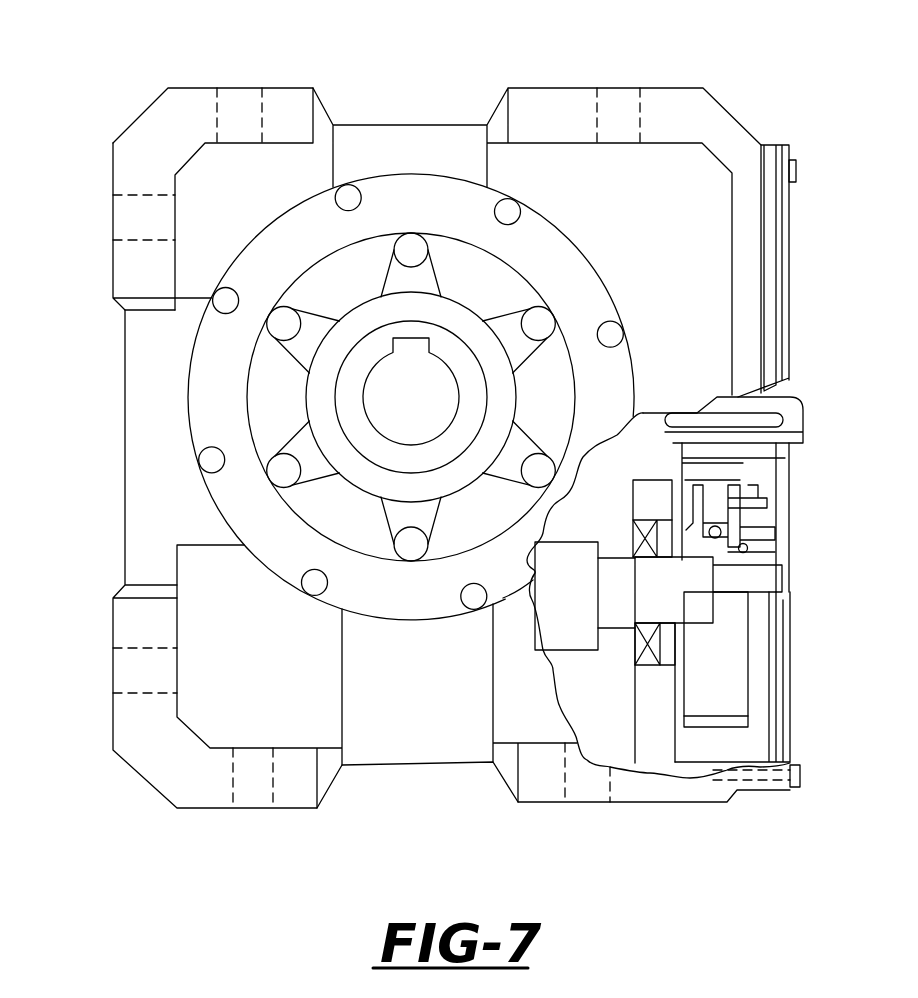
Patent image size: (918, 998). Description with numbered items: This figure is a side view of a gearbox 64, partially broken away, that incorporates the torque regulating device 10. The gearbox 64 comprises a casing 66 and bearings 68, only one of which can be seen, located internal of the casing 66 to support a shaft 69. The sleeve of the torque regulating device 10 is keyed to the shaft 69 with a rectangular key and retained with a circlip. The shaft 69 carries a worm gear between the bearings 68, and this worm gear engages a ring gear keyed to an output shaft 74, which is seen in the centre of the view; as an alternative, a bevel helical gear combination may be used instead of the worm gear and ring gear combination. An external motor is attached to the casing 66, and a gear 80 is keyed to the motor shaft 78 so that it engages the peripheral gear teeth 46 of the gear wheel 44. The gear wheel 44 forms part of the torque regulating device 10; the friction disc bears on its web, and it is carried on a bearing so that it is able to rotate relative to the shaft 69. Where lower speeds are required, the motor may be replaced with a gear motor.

The gearbox 64 is at (116, 126).
The casing 66 is at (123, 273).
The output shaft 74 is at (401, 428).
The motor shaft 78 is at (788, 405).
The gear 80 is at (743, 453).
The peripheral teeth 46 is at (690, 468).
The shaft 69 is at (567, 647).
The torque regulating device 10 is at (737, 618).
The gear wheel 44 is at (730, 677).
The bearings 68 is at (643, 630).